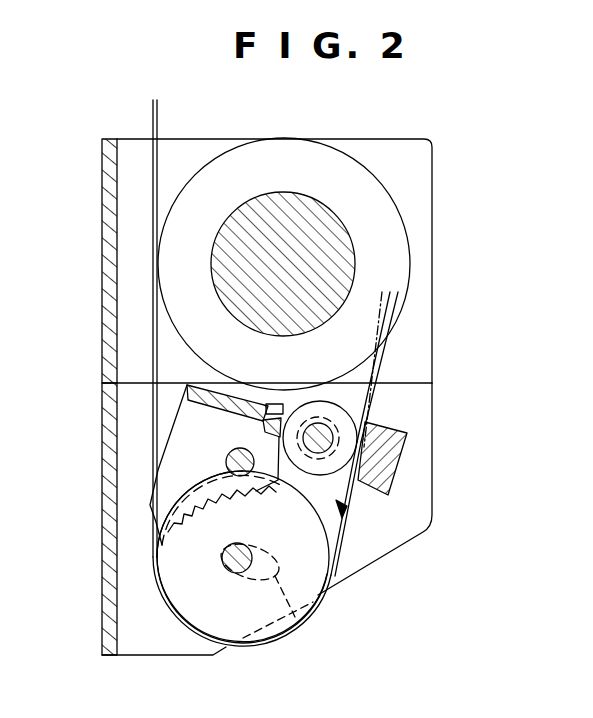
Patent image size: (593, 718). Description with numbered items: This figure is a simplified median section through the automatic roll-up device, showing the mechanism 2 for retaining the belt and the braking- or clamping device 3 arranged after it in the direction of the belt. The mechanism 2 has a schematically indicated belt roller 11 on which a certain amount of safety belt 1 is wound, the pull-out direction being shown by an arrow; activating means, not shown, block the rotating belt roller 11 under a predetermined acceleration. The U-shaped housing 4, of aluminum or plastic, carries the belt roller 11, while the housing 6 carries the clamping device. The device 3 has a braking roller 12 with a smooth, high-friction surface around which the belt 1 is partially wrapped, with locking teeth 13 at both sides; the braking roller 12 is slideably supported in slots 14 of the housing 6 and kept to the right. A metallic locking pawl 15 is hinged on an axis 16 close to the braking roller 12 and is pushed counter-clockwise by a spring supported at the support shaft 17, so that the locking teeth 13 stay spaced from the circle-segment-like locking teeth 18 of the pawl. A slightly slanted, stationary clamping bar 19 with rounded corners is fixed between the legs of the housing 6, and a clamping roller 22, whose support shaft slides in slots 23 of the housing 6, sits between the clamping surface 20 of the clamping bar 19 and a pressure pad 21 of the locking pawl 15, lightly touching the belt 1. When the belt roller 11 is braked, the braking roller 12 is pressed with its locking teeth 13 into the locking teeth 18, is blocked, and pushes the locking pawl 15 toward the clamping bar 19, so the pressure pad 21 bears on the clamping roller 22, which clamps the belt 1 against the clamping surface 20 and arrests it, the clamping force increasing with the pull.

The safety belt 1 is at (157, 118).
The mechanism for retaining the belt 2 is at (436, 254).
The braking- or clamping device 3 is at (436, 450).
The U-shaped housing 4 is at (107, 224).
The housing 6 is at (108, 460).
The belt roller 11 is at (345, 232).
The braking roller 12 is at (318, 594).
The locking teeth 13 is at (190, 511).
The slots 14 is at (300, 622).
The locking pawl 15 is at (183, 441).
The axis 16 is at (231, 455).
The support shaft 17 is at (229, 573).
The locking teeth of the locking pawl 18 is at (188, 490).
The clamping bar 19 is at (390, 472).
The clamping surface 20 is at (353, 421).
The pressure pad 21 is at (274, 430).
The clamping roller 22 is at (333, 467).
The slots 23 is at (326, 428).